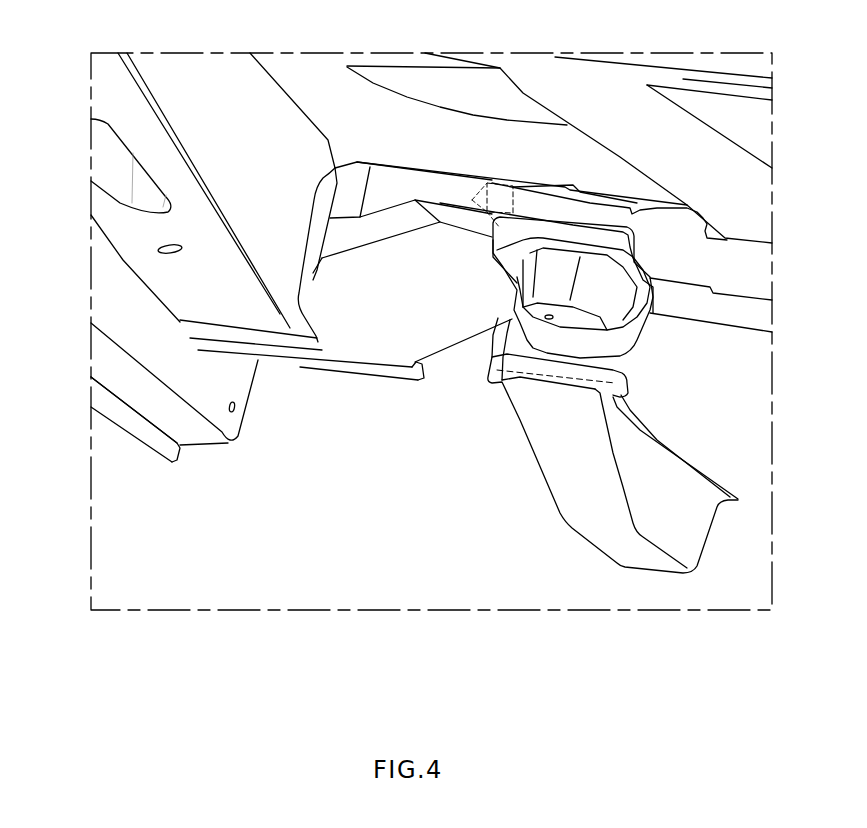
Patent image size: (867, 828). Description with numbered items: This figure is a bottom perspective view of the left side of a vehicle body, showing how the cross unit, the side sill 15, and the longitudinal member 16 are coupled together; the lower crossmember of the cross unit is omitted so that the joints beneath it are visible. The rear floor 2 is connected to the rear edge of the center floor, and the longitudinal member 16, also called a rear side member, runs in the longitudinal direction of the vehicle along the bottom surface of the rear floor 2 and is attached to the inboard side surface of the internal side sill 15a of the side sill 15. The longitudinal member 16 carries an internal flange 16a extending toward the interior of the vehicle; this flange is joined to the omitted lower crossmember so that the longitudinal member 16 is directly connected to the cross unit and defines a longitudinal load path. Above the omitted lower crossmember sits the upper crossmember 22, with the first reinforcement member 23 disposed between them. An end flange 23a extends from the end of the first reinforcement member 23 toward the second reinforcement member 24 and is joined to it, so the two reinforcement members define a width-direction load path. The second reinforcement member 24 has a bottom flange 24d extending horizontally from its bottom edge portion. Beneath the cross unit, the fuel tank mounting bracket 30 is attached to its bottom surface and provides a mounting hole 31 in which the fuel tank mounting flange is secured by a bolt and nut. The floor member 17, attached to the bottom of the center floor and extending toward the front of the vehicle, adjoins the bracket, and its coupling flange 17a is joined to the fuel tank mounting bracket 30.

The rear floor 2 is at (321, 67).
The side sill 15 is at (159, 442).
The internal side sill 15a is at (150, 403).
The longitudinal member 16 is at (137, 245).
The internal flange 16a is at (310, 273).
The floor member 17 is at (683, 458).
The coupling flange 17a is at (614, 392).
The upper crossmember 22 is at (633, 207).
The first reinforcement member 23 is at (593, 213).
The end flange 23a is at (488, 180).
The second reinforcement member 24 is at (368, 318).
The bottom flange 24d is at (390, 373).
The fuel tank mounting bracket 30 is at (623, 303).
The mounting hole 31 is at (548, 320).